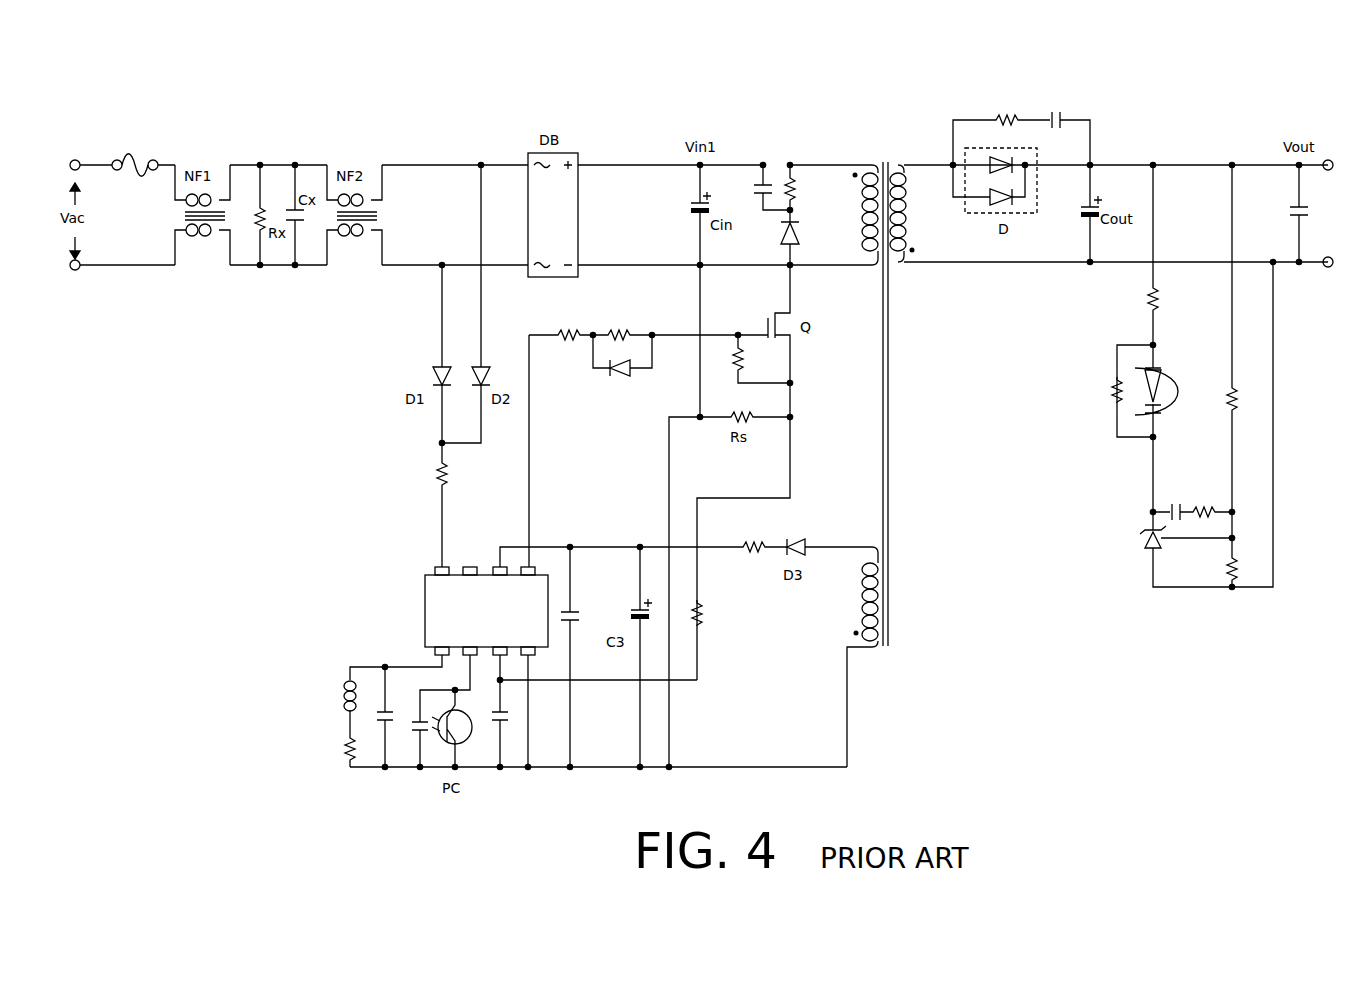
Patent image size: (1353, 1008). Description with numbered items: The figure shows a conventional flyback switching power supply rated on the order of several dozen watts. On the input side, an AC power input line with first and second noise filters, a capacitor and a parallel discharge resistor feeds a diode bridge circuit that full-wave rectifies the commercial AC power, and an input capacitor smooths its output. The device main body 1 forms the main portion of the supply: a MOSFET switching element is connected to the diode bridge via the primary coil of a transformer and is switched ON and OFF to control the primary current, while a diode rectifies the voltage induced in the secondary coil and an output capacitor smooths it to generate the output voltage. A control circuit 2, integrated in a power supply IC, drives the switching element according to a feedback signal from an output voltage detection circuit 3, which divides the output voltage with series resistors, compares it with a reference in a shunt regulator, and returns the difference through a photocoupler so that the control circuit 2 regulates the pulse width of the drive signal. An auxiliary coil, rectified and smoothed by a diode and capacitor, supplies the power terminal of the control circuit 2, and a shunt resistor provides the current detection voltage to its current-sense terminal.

The device main body 1 is at (792, 136).
The control circuit 2 is at (434, 608).
The output voltage detection circuit 3 is at (1300, 457).